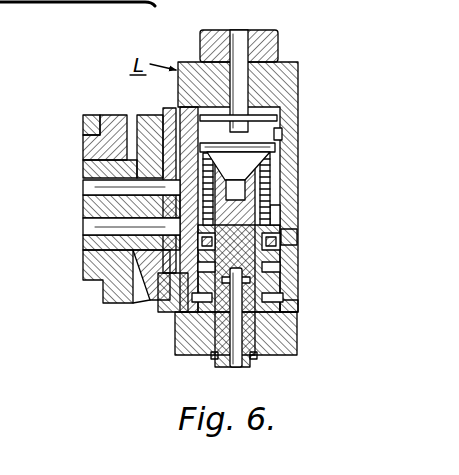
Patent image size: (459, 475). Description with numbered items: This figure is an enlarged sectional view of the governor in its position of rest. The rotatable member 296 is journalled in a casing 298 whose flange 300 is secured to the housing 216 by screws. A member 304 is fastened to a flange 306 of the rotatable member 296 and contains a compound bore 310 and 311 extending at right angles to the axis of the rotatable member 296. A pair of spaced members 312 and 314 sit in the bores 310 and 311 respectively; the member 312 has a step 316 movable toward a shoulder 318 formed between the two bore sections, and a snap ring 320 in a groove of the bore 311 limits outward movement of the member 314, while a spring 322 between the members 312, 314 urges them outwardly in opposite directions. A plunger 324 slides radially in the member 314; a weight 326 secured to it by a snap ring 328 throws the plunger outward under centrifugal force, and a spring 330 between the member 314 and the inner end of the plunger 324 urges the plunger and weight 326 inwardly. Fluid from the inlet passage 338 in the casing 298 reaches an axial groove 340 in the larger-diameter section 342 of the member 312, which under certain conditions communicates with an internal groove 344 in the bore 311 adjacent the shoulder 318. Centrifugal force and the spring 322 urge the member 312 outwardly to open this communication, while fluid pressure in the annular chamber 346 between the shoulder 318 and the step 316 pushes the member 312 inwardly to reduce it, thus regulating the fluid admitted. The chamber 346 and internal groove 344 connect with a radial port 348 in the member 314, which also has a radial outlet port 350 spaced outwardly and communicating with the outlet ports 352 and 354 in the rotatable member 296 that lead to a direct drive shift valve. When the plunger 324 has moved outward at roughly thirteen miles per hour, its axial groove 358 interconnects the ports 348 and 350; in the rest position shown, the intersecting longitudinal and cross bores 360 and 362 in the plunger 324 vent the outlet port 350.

The member 312 is at (262, 40).
The bore 310 is at (280, 82).
The annular chamber 346 is at (197, 128).
The axial groove 340 is at (168, 140).
The snap ring 320 is at (298, 308).
The shoulder 318 is at (280, 133).
The spring 322 is at (268, 202).
The bore 311 is at (271, 195).
The internal groove 344 is at (285, 150).
The spring 330 is at (265, 170).
The step 316 is at (283, 137).
The section of larger diameter 342 is at (280, 221).
The axial groove 358 is at (289, 240).
The member 314 is at (338, 257).
The radial port 348 is at (270, 270).
The member 304 is at (338, 289).
The cross bore 362 is at (272, 300).
The weight 326 is at (288, 338).
The snap ring 328 is at (251, 360).
The plunger 324 is at (252, 342).
The longitudinal bore 360 is at (233, 358).
The casing 298 is at (84, 150).
The rotatable member 296 is at (84, 162).
The housing 216 is at (82, 127).
The inlet passage 338 is at (95, 187).
The outlet port 354 is at (100, 228).
The flange 300 is at (102, 291).
The outlet port 352 is at (157, 270).
The flange 306 is at (138, 302).
The radial outlet port 350 is at (170, 313).